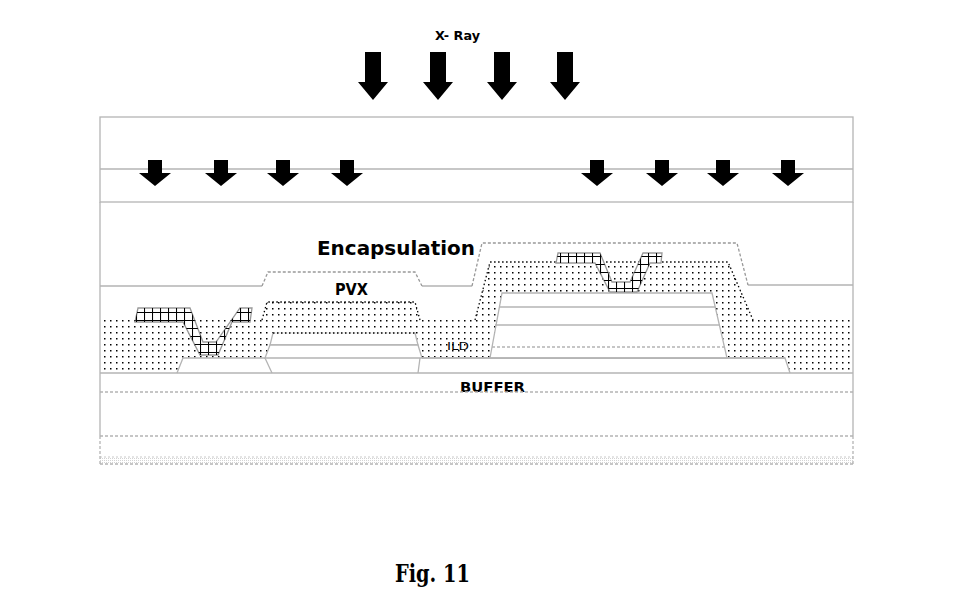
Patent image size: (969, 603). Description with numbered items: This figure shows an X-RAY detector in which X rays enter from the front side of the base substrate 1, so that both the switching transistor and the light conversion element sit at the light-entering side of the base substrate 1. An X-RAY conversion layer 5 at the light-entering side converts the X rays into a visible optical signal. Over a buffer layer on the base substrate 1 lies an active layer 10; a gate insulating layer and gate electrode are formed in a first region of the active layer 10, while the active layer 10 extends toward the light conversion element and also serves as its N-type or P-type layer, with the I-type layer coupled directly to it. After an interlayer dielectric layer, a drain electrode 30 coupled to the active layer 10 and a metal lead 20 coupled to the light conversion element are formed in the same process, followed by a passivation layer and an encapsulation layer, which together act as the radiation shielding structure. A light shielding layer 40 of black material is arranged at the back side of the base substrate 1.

The X-RAY conversion layer 5 is at (853, 145).
The metal lead 20 is at (663, 250).
The drain electrode 30 is at (167, 310).
The active layer 10 is at (760, 358).
The base substrate 1 is at (100, 412).
The light shielding layer 40 is at (553, 464).